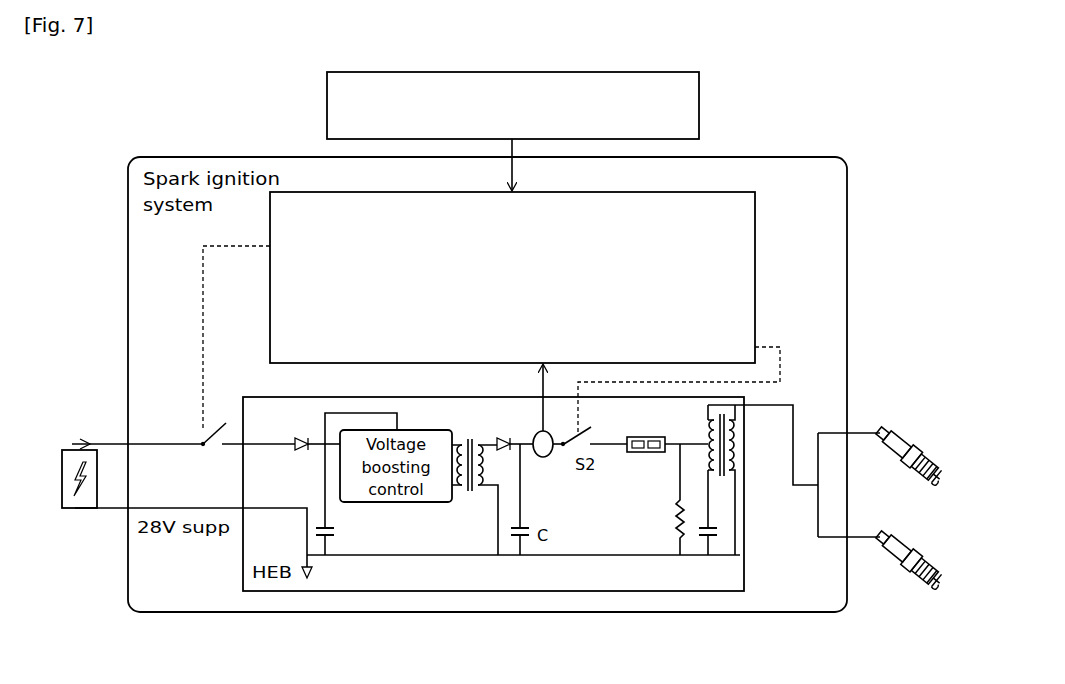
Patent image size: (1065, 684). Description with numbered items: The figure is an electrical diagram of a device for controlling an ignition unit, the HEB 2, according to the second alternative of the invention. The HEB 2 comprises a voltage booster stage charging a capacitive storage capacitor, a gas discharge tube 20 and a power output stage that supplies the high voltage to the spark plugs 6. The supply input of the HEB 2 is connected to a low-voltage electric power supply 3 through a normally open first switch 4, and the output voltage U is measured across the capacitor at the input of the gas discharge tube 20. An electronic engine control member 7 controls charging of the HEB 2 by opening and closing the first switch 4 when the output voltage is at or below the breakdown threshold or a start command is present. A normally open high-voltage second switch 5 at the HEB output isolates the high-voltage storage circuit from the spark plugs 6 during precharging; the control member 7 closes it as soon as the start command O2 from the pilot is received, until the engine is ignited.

The start command O2 is at (682, 124).
The electronic engine control member 7 is at (742, 242).
The HEB 2 is at (382, 585).
The electric power supply 3 is at (46, 456).
The first switch 4 is at (201, 441).
The second switch 5 is at (558, 456).
The gas discharge tube 20 is at (647, 454).
The spark plugs 6 is at (908, 444).